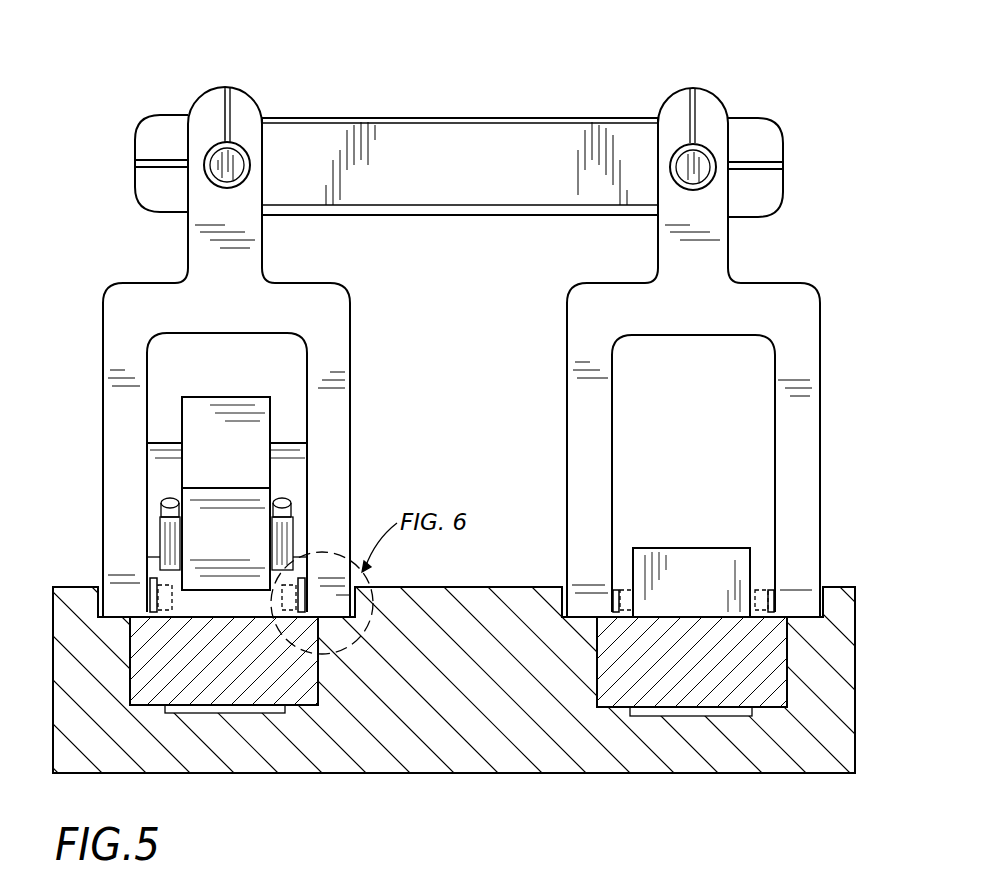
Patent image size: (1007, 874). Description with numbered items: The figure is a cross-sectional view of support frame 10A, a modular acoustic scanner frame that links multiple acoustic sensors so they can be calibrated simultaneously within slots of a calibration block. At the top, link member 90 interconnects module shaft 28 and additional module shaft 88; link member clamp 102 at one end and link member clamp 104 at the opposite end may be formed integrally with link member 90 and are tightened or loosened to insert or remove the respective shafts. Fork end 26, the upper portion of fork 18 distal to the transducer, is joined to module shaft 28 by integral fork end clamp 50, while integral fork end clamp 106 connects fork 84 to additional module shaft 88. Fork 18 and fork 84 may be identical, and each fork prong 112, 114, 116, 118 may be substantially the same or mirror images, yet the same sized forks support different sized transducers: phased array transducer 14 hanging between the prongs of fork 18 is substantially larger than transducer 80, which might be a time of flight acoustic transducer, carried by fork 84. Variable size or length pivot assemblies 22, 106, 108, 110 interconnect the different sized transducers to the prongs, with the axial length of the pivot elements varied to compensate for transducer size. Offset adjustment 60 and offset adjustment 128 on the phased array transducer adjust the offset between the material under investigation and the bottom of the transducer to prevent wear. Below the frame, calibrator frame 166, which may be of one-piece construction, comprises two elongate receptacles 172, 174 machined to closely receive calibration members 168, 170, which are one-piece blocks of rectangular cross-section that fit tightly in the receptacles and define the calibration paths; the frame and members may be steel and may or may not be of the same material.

The support frame 10A is at (633, 73).
The phased array transducer 14 is at (165, 473).
The fork 18 is at (118, 343).
The pivot assembly 22 is at (147, 598).
The fork end 26 is at (222, 205).
The module shaft 28 is at (213, 147).
The integral fork end clamp 50 is at (240, 118).
The phased array transducer offset adjustment 60 is at (160, 503).
The transducer 80 is at (708, 563).
The fork 84 is at (798, 383).
The additional module shaft 88 is at (698, 168).
The link member 90 is at (432, 155).
The link member clamp 102 is at (153, 138).
The link member clamp 104 is at (752, 145).
The integral fork end clamp 106 is at (708, 112).
The pivot assembly 108 is at (628, 602).
The pivot assembly 110 is at (757, 598).
The fork prong 112 is at (118, 435).
The fork prong 114 is at (330, 390).
The fork prong 116 is at (583, 393).
The fork prong 118 is at (803, 448).
The offset adjustment 128 is at (285, 495).
The calibrator frame 166 is at (445, 745).
The calibration member 168 is at (237, 683).
The calibration member 170 is at (680, 685).
The receptacle 172 is at (128, 682).
The receptacle 174 is at (595, 685).